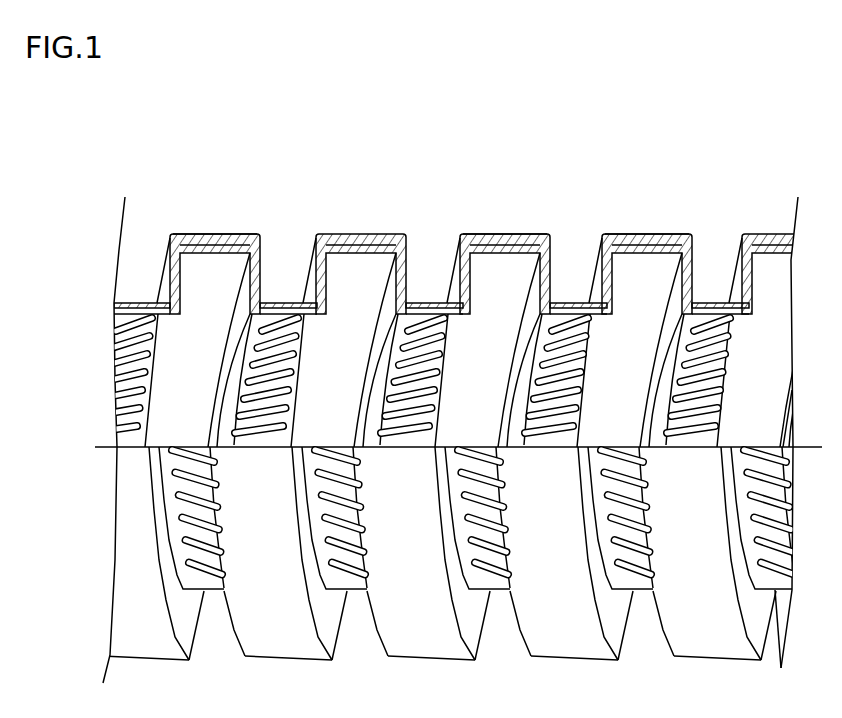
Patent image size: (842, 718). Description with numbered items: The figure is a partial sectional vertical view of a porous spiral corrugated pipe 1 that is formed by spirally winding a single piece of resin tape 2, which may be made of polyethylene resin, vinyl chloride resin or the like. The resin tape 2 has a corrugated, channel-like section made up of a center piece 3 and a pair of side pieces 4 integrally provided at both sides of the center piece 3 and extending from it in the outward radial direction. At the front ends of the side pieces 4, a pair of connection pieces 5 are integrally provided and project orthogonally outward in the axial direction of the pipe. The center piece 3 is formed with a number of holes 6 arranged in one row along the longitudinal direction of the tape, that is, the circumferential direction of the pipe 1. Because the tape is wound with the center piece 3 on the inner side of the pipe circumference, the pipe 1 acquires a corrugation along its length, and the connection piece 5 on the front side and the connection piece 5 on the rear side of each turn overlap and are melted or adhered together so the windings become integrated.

The spiral corrugated pipe 1 is at (518, 218).
The resin tape 2 is at (407, 270).
The center piece 3 is at (520, 390).
The side pieces 4 is at (523, 305).
The connection pieces 5 is at (501, 254).
The holes 6 is at (572, 308).